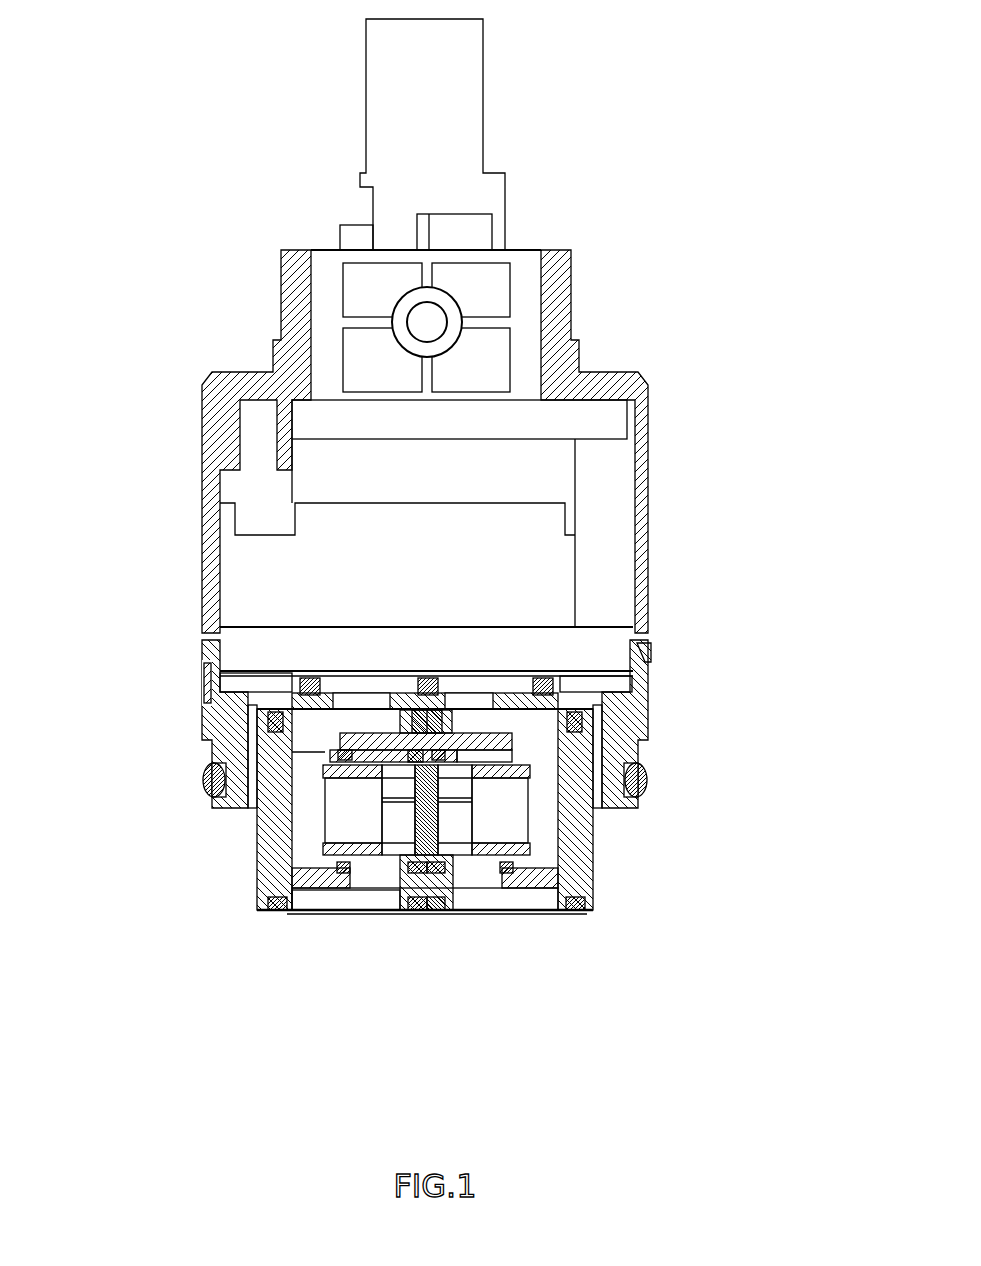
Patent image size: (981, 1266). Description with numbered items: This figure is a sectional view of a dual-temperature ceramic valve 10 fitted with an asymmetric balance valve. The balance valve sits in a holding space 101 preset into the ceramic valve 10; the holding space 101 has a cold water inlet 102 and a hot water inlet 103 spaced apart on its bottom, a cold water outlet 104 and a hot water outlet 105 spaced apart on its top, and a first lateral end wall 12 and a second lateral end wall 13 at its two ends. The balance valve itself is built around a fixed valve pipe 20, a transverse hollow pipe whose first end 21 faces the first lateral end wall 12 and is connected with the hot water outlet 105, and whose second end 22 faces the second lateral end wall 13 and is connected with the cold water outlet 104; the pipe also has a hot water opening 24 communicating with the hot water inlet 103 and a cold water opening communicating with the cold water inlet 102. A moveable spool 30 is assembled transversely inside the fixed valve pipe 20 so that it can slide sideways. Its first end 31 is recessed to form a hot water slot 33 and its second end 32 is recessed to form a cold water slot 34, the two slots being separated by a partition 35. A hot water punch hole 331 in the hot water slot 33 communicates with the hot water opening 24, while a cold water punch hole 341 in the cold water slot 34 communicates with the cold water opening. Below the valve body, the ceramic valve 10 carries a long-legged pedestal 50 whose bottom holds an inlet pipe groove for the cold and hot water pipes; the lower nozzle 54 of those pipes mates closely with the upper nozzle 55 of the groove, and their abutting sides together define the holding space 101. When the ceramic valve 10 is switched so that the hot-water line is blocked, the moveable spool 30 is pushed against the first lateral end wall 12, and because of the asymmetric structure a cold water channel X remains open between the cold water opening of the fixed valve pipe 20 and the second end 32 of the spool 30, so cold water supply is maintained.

The dual-temperature ceramic valve 10 is at (191, 336).
The long-legged pedestal 50 is at (700, 928).
The upper nozzle 55 is at (225, 677).
The cold water outlet 104 is at (655, 664).
The hot water outlet 105 is at (202, 682).
The holding space 101 is at (270, 727).
The second end 32 is at (650, 779).
The first lateral end wall 12 is at (273, 823).
The second lateral end wall 13 is at (600, 812).
The moveable spool 30 is at (560, 767).
The hot water slot 33 is at (277, 833).
The cold water channel X is at (595, 722).
The second end 22 is at (467, 880).
The partition 35 is at (417, 913).
The hot water opening 24 is at (363, 880).
The cold water inlet 102 is at (543, 902).
The hot water punch hole 331 is at (390, 880).
The cold water punch hole 341 is at (483, 880).
The first end 31 is at (325, 873).
The cold water slot 34 is at (527, 841).
The lower nozzle 54 is at (340, 910).
The fixed valve pipe 20 is at (293, 912).
The hot water inlet 103 is at (333, 902).
The first end 21 is at (320, 908).